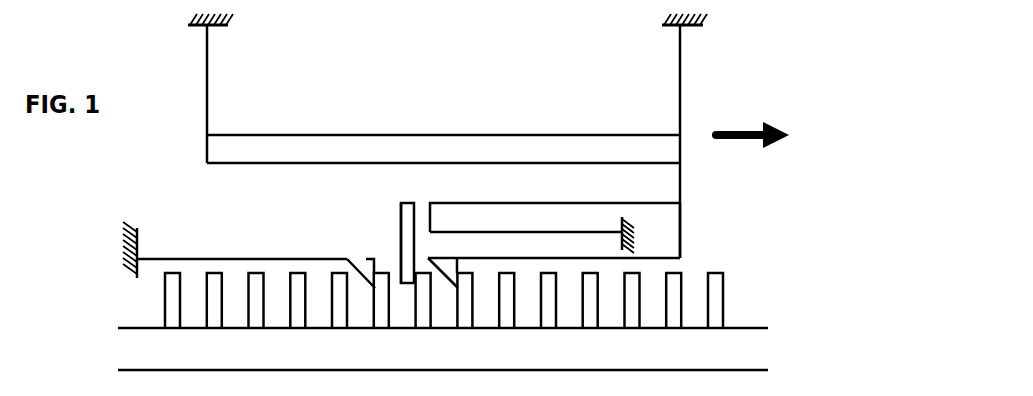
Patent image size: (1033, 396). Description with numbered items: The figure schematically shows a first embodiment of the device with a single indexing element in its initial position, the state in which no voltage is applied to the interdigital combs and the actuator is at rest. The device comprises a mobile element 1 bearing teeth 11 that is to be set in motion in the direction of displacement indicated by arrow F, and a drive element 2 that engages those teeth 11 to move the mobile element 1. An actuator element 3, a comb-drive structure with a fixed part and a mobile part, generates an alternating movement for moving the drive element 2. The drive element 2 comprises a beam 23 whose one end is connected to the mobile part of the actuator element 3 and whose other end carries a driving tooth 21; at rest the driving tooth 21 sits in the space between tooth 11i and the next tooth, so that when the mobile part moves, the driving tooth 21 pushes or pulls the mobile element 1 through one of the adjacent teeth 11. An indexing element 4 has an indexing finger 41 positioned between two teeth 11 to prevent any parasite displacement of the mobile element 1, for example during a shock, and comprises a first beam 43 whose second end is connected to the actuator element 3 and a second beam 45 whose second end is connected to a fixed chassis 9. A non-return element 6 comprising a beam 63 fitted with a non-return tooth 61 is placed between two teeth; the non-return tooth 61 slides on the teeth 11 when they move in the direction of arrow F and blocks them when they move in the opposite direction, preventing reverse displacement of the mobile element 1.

The mobile element 1 is at (752, 327).
The drive element 2 is at (680, 232).
The actuator element 3 is at (215, 150).
The indexing element 4 is at (417, 203).
The non-return element 6 is at (175, 259).
The fixed chassis 9 is at (197, 27).
The teeth 11 is at (713, 302).
The tooth i 11i is at (465, 300).
The driving tooth 21 is at (447, 261).
The beam 23 is at (530, 258).
The indexing finger 41 is at (406, 223).
The first beam 43 is at (592, 203).
The second beam 45 is at (583, 232).
The non-return tooth 61 is at (363, 262).
The beam 63 is at (278, 259).
The arrow F is at (747, 131).